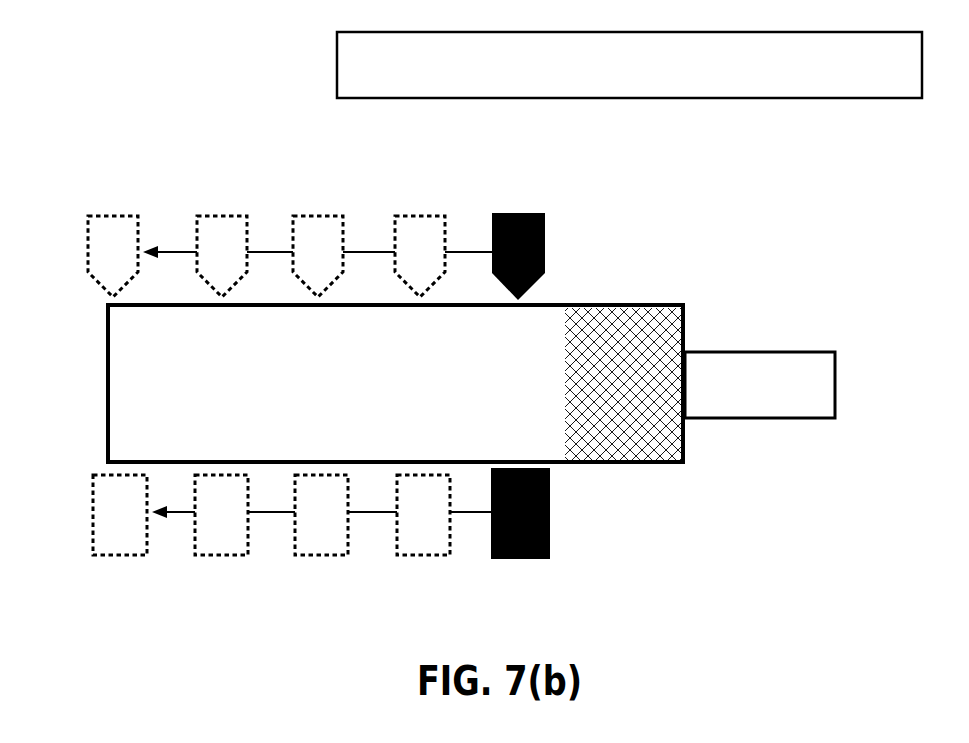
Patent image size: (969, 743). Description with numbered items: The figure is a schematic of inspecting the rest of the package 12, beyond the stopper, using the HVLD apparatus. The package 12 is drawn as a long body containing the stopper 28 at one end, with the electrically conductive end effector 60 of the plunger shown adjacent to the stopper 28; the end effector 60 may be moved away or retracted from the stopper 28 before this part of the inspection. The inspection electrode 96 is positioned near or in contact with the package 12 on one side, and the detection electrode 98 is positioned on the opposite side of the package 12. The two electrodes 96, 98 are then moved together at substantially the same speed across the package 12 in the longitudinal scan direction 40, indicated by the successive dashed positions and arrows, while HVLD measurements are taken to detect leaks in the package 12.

The scan direction 40 is at (305, 65).
The package 12 is at (100, 385).
The stopper 28 is at (632, 299).
The end effector 60 is at (766, 345).
The inspection electrode 96 is at (516, 206).
The detection electrode 98 is at (565, 514).